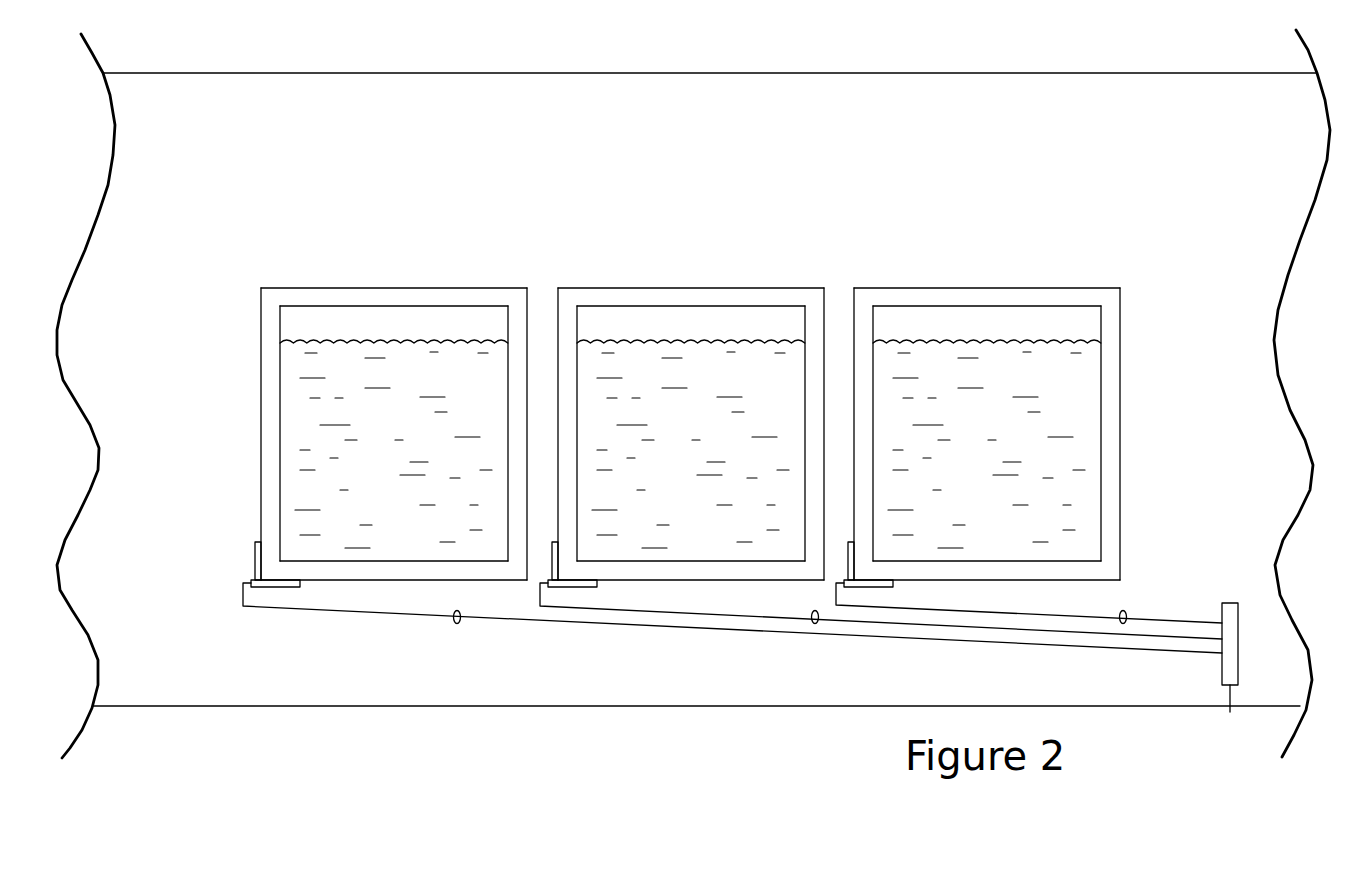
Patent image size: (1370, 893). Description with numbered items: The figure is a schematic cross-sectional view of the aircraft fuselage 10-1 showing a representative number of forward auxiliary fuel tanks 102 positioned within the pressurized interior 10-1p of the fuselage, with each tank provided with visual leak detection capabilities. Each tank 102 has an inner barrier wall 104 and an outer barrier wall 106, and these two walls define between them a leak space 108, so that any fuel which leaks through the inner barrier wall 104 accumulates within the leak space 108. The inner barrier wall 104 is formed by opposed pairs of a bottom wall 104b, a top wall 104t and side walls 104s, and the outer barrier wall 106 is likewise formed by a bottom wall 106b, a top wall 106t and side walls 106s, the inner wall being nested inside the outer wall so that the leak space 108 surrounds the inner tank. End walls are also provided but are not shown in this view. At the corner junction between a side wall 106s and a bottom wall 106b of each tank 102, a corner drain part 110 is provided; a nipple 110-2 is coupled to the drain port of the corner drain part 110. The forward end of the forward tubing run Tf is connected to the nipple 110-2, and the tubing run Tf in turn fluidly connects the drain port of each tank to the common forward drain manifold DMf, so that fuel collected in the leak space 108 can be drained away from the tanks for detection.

The aircraft fuselage 10-1 is at (968, 73).
The pressurized interior 10-1p is at (228, 163).
The forward auxiliary fuel tank 102 is at (341, 291).
The inner barrier wall 104 is at (683, 404).
The top wall of inner barrier wall 104t is at (487, 305).
The side wall of inner barrier wall 104s is at (506, 392).
The bottom wall of inner barrier wall 104b is at (333, 561).
The outer barrier wall 106 is at (672, 433).
The top wall of outer barrier wall 106t is at (430, 287).
The side wall of outer barrier wall 106s is at (261, 436).
The bottom wall of outer barrier wall 106b is at (361, 582).
The leak space 108 is at (271, 511).
The corner drain part 110 is at (254, 548).
The nipple 110-2 is at (250, 585).
The forward tubing run Tf is at (457, 624).
The forward drain manifold DMf is at (1232, 625).